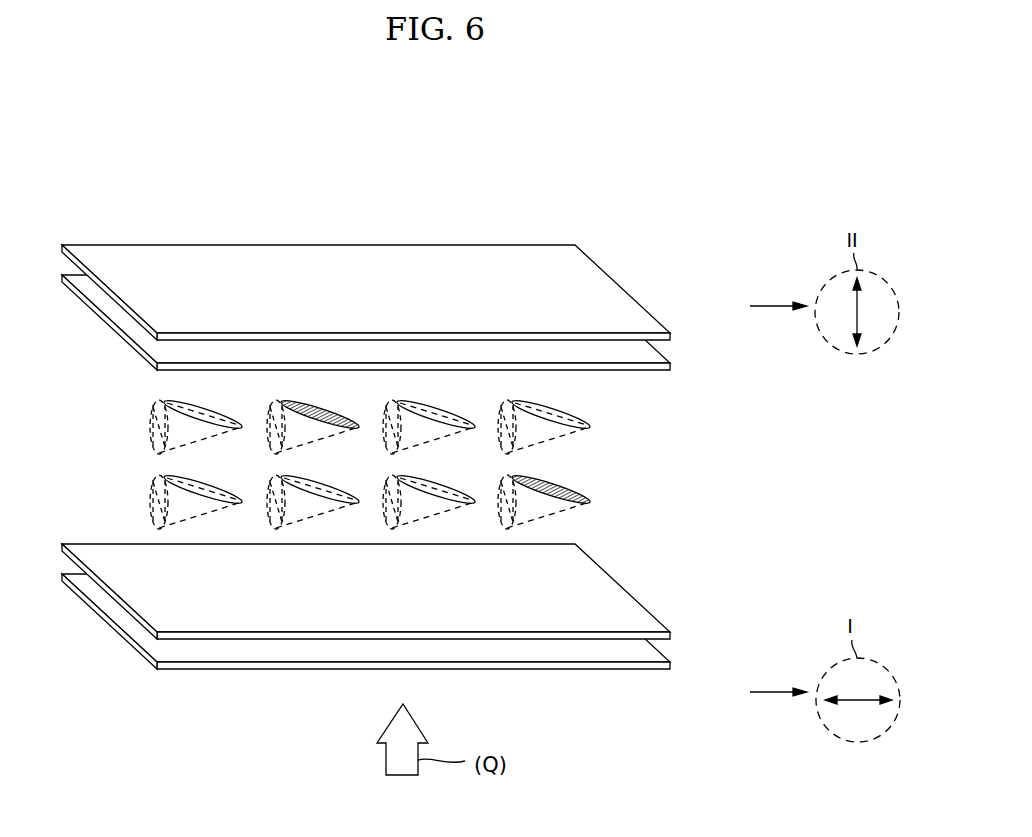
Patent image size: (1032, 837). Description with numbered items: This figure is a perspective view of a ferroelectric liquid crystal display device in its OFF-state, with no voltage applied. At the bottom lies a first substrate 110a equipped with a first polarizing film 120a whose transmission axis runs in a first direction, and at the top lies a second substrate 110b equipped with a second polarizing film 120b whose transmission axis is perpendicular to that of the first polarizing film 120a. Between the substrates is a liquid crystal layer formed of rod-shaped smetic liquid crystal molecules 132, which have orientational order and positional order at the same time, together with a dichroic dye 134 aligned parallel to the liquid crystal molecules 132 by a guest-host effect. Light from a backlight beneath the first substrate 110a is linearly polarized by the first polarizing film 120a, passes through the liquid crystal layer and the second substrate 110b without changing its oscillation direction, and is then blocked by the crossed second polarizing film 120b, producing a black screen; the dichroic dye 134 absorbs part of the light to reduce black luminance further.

The first substrate 110a is at (653, 627).
The first polarizing film 120a is at (653, 670).
The second substrate 110b is at (653, 371).
The second polarizing film 120b is at (653, 327).
The smetic liquid crystal molecules 132 is at (560, 418).
The dichroic dye 134 is at (558, 492).